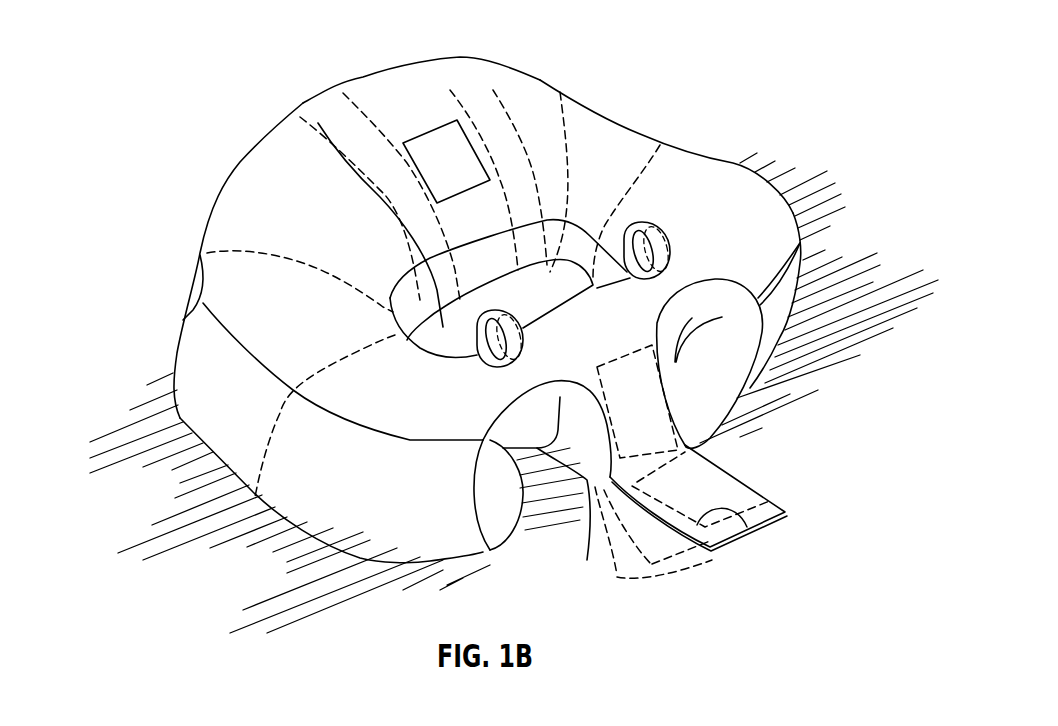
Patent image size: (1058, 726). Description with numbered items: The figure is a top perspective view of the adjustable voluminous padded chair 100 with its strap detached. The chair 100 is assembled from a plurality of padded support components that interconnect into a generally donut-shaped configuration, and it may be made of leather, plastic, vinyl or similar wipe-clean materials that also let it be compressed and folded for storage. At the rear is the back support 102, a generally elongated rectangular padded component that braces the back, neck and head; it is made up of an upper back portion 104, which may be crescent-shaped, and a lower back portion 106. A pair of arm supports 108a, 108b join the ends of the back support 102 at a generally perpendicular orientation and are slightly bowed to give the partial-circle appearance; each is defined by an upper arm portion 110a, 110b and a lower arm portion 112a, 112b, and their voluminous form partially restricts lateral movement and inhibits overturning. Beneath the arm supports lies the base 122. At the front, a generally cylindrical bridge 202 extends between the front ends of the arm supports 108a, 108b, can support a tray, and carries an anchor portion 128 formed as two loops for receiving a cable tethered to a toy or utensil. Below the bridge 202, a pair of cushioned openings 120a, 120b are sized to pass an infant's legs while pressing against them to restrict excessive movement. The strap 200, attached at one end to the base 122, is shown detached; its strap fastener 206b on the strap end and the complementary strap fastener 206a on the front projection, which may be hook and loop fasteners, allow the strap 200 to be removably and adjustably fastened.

The chair 100 is at (236, 60).
The back support 102 is at (384, 252).
The upper back portion 104 is at (383, 93).
The lower back portion 106 is at (505, 153).
The arm support 108a is at (337, 342).
The arm support 108b is at (628, 163).
The upper arm portion 110a is at (237, 293).
The upper arm portion 110b is at (590, 108).
The lower arm portion 112a is at (363, 513).
The lower arm portion 112b is at (795, 266).
The opening 120a is at (548, 517).
The opening 120b is at (760, 396).
The base 122 is at (322, 124).
The anchor portion 128 is at (650, 233).
The strap 200 is at (763, 511).
The bridge 202 is at (557, 492).
The strap fastener 206a is at (643, 407).
The strap fastener 206b is at (735, 512).